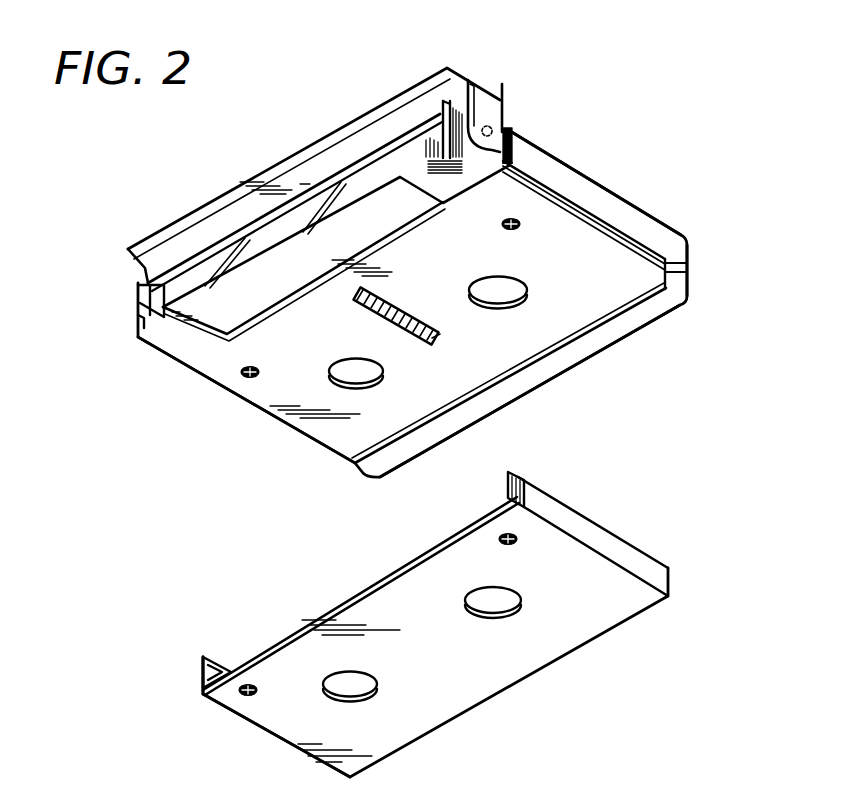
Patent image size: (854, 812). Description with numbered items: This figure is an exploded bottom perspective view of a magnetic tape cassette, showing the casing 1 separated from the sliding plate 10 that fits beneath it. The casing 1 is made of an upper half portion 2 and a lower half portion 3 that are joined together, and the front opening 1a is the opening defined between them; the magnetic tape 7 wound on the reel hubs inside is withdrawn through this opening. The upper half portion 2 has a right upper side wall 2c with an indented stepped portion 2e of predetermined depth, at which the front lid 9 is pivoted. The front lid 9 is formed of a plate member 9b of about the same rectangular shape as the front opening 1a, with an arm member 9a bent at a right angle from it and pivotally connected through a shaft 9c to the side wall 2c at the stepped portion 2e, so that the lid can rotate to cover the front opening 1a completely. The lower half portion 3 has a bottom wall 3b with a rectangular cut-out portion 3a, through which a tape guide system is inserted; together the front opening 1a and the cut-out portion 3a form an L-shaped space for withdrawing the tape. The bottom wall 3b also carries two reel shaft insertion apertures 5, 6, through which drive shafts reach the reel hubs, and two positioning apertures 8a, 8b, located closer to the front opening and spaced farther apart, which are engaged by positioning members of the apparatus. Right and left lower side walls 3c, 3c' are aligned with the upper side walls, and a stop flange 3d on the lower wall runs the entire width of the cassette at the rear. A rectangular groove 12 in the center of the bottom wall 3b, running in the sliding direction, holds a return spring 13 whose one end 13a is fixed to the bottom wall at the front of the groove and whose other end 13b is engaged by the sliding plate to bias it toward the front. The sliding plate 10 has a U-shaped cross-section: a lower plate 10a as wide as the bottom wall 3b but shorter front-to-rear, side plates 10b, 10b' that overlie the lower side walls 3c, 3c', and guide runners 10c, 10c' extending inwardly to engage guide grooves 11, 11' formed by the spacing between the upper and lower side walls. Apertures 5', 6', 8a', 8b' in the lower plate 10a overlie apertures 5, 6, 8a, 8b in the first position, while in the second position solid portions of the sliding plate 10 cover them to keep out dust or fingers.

The casing 1 is at (722, 237).
The front opening 1a is at (150, 340).
The upper half portion 2 is at (693, 244).
The right upper side wall 2c is at (614, 200).
The indented stepped portion 2e is at (466, 128).
The lower half portion 3 is at (693, 284).
The cut-out portion 3a is at (218, 326).
The bottom wall 3b is at (622, 306).
The right lower side wall 3c is at (595, 216).
The left lower side wall 3c' is at (249, 400).
The stop flange 3d is at (596, 354).
The reel shaft insertion aperture 5 is at (346, 423).
The aperture 5' is at (319, 716).
The reel shaft insertion aperture 6 is at (518, 347).
The aperture 6' is at (515, 645).
The magnetic tape 7 is at (160, 292).
The positioning aperture 8a is at (242, 407).
The aperture 8a' is at (223, 712).
The positioning aperture 8b is at (506, 245).
The aperture 8b' is at (551, 511).
The front lid 9 is at (270, 168).
The arm member 9a is at (500, 112).
The plate member 9b is at (474, 90).
The shaft 9c is at (505, 123).
The sliding plate 10 is at (500, 740).
The lower plate 10a is at (600, 615).
The side plate 10b is at (593, 536).
The side plate 10b' is at (174, 673).
The guide runner 10c is at (540, 477).
The guide runner 10c' is at (218, 650).
The guide groove 11 is at (411, 105).
The guide groove 11' is at (114, 325).
The rectangular groove 12 is at (436, 342).
The return spring 13 is at (405, 345).
The one end of return spring 13a is at (362, 300).
The other end of return spring 13b is at (424, 340).